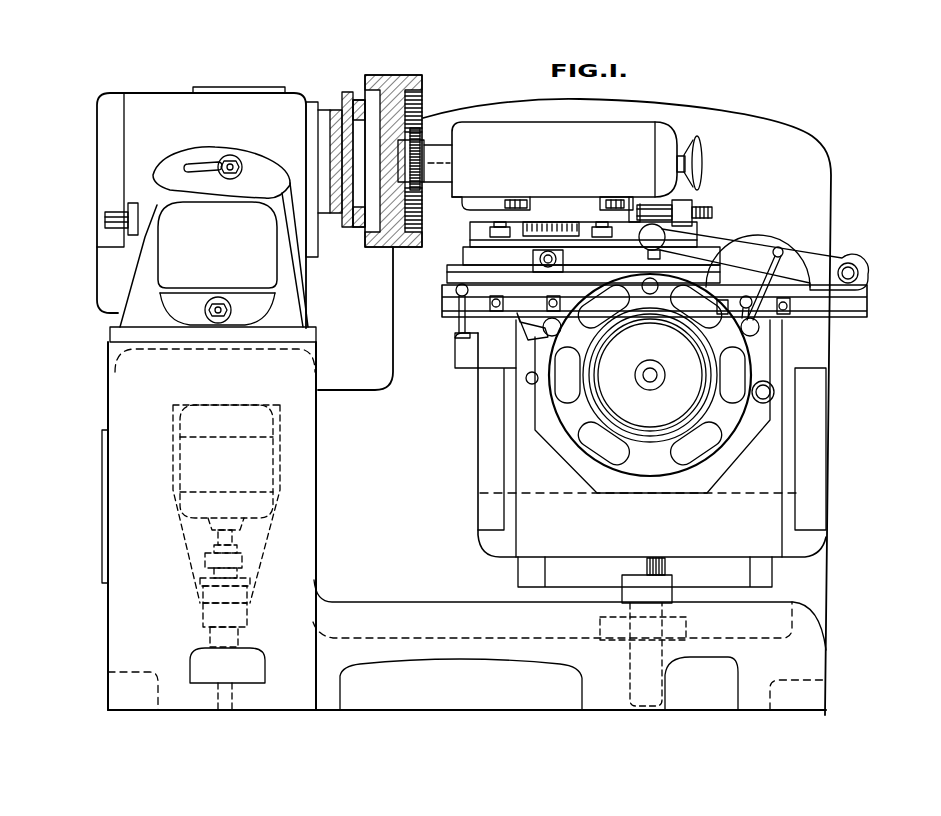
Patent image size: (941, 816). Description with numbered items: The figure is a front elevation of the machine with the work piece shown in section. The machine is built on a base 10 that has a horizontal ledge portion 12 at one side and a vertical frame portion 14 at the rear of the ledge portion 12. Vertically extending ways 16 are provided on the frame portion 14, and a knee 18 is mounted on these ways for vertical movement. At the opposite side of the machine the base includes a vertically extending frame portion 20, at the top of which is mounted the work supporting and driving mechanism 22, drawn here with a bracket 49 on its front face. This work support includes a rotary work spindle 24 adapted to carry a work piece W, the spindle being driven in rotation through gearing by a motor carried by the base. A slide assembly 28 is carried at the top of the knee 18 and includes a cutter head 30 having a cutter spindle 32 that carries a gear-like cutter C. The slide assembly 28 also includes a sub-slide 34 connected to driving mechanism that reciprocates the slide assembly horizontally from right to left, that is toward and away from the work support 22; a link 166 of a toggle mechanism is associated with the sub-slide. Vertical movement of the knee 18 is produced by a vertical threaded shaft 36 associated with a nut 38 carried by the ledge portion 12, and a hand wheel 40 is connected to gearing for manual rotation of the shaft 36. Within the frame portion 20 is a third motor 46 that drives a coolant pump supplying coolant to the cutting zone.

The base 10 is at (106, 404).
The horizontal ledge portion 12 is at (450, 602).
The vertical frame portion 14 is at (830, 238).
The ways 16 is at (773, 577).
The knee 18 is at (830, 347).
The vertically extending frame portion 20 is at (318, 470).
The work supporting and driving mechanism 22 is at (95, 152).
The work spindle 24 is at (336, 102).
The slide assembly 28 is at (445, 271).
The cutter head 30 is at (640, 121).
The cutter spindle 32 is at (440, 142).
The sub-slide 34 is at (868, 311).
The vertical threaded shaft 36 is at (666, 574).
The nut 38 is at (628, 597).
The hand wheel 40 is at (712, 453).
The third motor 46 is at (241, 405).
The belt guard bracket 49 is at (173, 102).
The link 166 is at (768, 240).
The work piece W is at (408, 76).
The gear-like cutter C is at (413, 130).